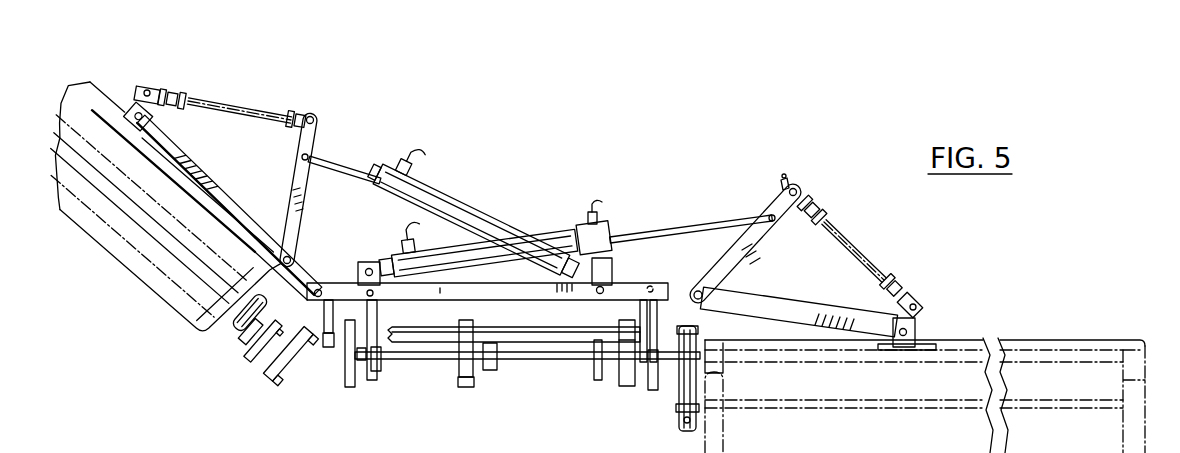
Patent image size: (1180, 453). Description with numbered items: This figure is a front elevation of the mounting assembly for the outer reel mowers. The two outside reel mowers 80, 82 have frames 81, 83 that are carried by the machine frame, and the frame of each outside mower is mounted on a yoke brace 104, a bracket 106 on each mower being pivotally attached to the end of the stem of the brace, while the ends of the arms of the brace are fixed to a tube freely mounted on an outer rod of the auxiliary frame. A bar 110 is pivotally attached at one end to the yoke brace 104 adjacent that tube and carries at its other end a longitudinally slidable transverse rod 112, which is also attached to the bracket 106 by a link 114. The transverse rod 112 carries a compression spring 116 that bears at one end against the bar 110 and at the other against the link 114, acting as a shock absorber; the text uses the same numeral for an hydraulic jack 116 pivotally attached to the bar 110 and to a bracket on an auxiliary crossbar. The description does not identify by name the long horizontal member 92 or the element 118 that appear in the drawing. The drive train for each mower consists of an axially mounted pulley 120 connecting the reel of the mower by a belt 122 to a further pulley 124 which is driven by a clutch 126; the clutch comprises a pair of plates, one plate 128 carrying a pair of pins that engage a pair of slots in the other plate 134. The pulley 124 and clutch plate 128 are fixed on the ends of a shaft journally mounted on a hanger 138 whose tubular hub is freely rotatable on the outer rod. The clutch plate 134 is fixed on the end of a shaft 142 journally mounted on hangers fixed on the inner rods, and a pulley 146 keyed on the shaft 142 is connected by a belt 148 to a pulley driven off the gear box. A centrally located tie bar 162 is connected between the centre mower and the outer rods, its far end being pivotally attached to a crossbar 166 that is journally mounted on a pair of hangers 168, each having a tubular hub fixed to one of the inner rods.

The reel mower 80 is at (116, 261).
The frame 81 is at (182, 194).
The reel mower 82 is at (1031, 341).
The frame 83 is at (985, 336).
The main beam 92 is at (535, 293).
The yoke brace 104 is at (230, 203).
The bracket 106 is at (152, 125).
The bar 110 is at (306, 213).
The transverse rod 112 is at (240, 110).
The link 114 is at (138, 92).
The compression spring 116 is at (174, 93).
The cylinder mounting bracket 118 is at (360, 272).
The pulley 120 is at (220, 332).
The belt 122 is at (706, 374).
The further pulley 124 is at (247, 340).
The clutch 126 is at (617, 377).
The clutch plate 128 is at (280, 367).
The clutch plate 134 is at (355, 388).
The hanger 138 is at (260, 360).
The shaft 142 is at (407, 361).
The pulley 146 is at (456, 378).
The belt 148 is at (465, 387).
The tie bar 162 is at (493, 370).
The crossbar 166 is at (545, 343).
The hangers 168 is at (330, 350).